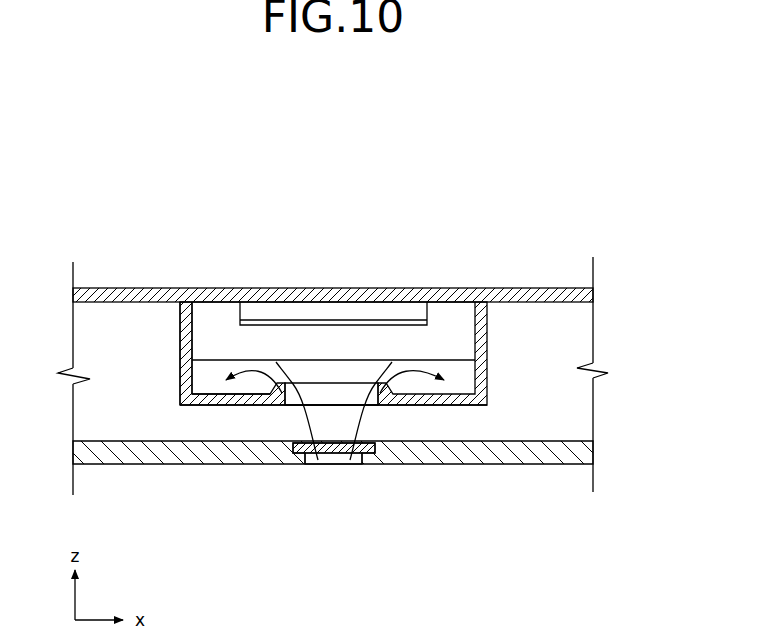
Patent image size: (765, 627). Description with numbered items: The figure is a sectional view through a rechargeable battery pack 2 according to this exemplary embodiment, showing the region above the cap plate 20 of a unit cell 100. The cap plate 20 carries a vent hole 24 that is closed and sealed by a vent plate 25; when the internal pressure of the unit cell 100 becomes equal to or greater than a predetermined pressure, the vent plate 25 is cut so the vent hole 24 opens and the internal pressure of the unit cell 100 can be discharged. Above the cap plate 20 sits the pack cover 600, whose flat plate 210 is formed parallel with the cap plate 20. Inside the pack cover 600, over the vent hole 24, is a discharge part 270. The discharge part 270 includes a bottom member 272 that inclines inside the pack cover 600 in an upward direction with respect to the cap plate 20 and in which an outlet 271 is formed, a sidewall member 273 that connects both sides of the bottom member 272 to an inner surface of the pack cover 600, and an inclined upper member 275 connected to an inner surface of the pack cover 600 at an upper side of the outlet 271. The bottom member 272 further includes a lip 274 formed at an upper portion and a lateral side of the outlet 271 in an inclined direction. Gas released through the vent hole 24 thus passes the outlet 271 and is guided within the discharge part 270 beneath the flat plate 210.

The rechargeable battery pack 2 is at (257, 211).
The unit cell 100 is at (368, 570).
The pack cover 600 is at (169, 287).
The flat plate 210 is at (511, 297).
The discharge part 270 is at (497, 385).
The sidewall member 273 is at (188, 348).
The bottom member 272 is at (206, 397).
The lip 274 is at (265, 368).
The inclined upper member 275 is at (388, 312).
The outlet 271 is at (330, 395).
The cap plate 20 is at (514, 450).
The vent plate 25 is at (317, 455).
The vent hole 24 is at (342, 455).